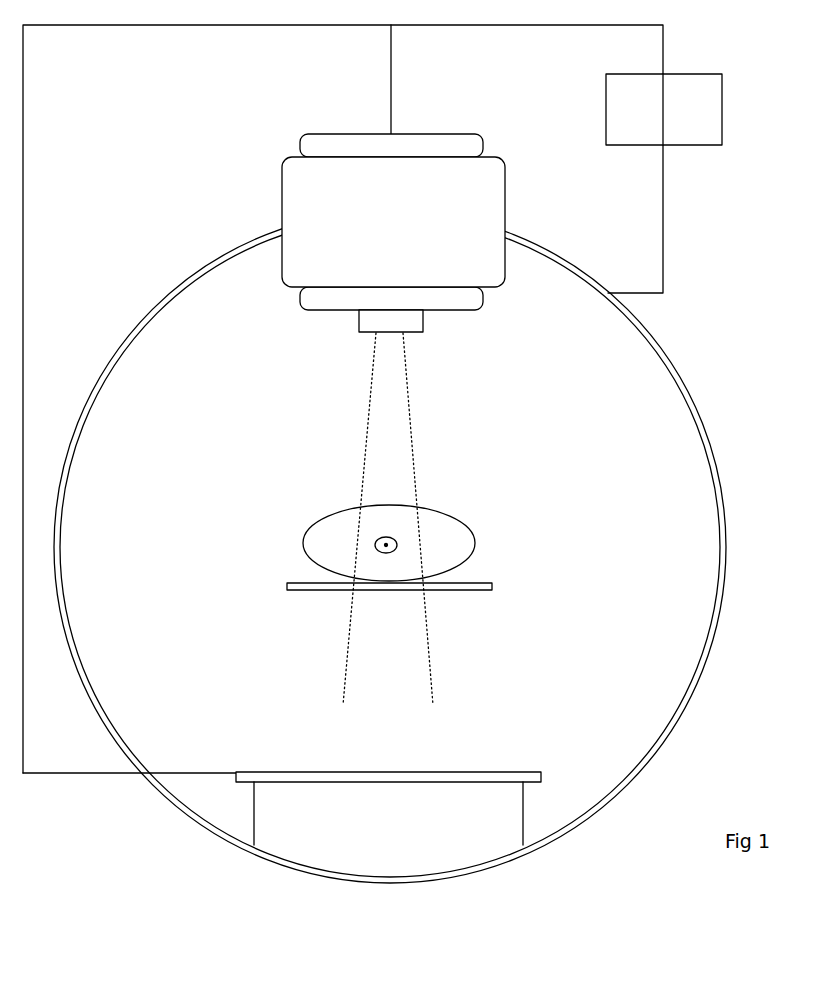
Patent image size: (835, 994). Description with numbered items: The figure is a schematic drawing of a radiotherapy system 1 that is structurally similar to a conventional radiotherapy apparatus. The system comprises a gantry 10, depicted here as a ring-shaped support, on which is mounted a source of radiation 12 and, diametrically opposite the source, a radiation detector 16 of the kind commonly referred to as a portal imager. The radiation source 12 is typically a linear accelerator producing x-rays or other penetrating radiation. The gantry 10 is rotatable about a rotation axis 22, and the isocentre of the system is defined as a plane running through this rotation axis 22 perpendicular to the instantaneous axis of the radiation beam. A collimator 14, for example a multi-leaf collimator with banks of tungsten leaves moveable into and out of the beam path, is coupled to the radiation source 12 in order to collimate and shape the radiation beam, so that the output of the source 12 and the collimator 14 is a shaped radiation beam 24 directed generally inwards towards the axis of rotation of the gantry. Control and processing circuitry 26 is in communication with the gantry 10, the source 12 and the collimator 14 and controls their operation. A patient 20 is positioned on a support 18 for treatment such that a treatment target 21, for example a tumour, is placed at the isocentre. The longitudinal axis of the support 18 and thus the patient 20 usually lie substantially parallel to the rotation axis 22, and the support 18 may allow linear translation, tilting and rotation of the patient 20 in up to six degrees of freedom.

The radiotherapy system 1 is at (724, 302).
The gantry 10 is at (220, 835).
The source of radiation 12 is at (329, 204).
The collimator 14 is at (425, 323).
The radiation detector 16 is at (541, 782).
The support 18 is at (460, 590).
The patient 20 is at (468, 562).
The treatment target 21 is at (388, 545).
The rotation axis 22 is at (386, 545).
The shaped radiation beam 24 is at (368, 414).
The control and processing circuitry 26 is at (606, 100).